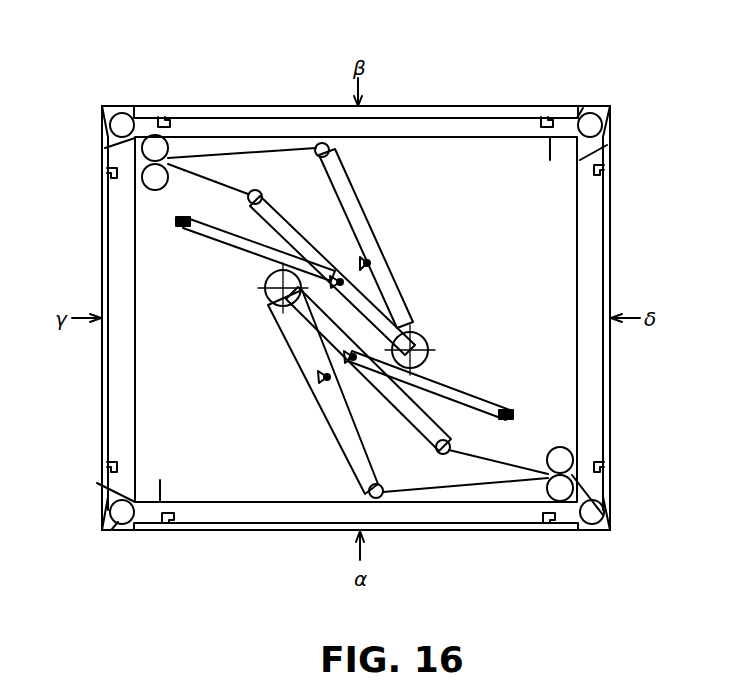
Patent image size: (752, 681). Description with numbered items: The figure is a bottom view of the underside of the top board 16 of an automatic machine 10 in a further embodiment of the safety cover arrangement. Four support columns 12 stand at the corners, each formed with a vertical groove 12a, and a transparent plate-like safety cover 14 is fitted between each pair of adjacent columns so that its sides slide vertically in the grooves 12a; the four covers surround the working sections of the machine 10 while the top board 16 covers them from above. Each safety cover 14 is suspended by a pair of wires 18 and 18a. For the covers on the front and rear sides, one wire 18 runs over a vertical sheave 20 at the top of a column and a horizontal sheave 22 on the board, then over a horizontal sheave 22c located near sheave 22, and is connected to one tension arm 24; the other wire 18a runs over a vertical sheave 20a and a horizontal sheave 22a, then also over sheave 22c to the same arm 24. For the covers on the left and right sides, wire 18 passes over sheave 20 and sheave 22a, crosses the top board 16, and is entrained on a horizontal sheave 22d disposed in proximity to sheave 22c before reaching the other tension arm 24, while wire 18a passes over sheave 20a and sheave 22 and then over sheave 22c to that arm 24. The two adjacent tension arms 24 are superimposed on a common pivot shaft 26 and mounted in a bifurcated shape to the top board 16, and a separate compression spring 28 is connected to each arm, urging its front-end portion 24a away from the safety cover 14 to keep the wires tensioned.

The automatic machine 10 is at (626, 252).
The support column 12 is at (113, 127).
The groove 12a is at (550, 140).
The safety cover 14 is at (435, 106).
The top board 16 is at (533, 268).
The wire 18 is at (604, 118).
The wire 18a is at (140, 107).
The vertical sheave 20 is at (134, 107).
The vertical sheave 20a is at (563, 107).
The horizontal sheave 22 is at (103, 107).
The horizontal sheave 22a is at (583, 108).
The horizontal sheave 22c is at (168, 140).
The horizontal sheave 22d is at (160, 191).
The tension arm 24 is at (330, 242).
The front-end portion 24a is at (262, 193).
The pivot shaft 26 is at (430, 335).
The compression spring 28 is at (237, 227).